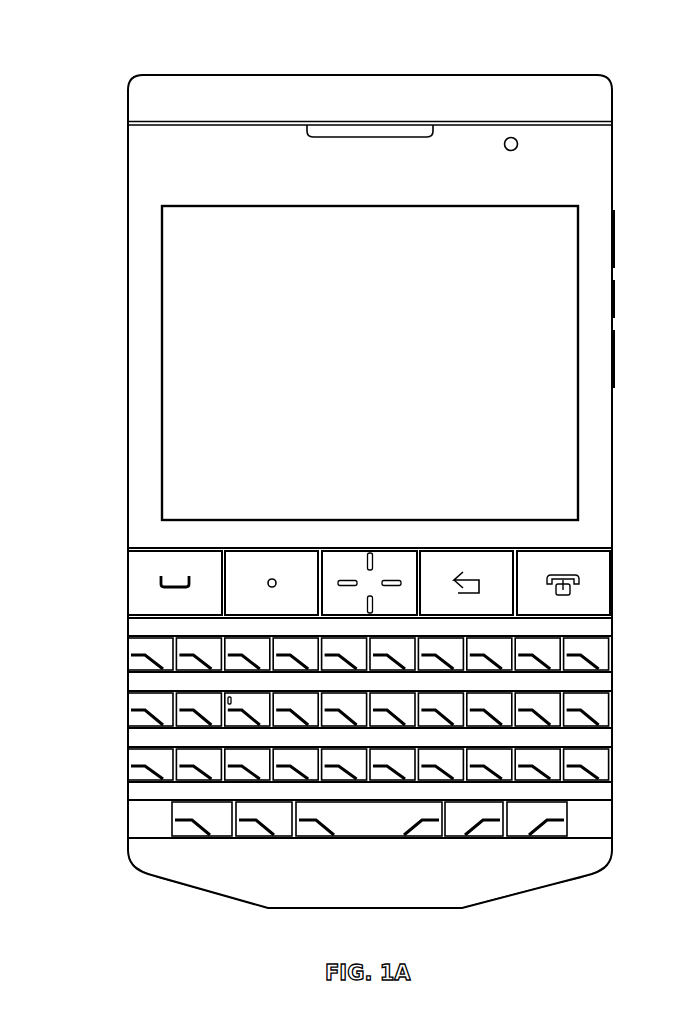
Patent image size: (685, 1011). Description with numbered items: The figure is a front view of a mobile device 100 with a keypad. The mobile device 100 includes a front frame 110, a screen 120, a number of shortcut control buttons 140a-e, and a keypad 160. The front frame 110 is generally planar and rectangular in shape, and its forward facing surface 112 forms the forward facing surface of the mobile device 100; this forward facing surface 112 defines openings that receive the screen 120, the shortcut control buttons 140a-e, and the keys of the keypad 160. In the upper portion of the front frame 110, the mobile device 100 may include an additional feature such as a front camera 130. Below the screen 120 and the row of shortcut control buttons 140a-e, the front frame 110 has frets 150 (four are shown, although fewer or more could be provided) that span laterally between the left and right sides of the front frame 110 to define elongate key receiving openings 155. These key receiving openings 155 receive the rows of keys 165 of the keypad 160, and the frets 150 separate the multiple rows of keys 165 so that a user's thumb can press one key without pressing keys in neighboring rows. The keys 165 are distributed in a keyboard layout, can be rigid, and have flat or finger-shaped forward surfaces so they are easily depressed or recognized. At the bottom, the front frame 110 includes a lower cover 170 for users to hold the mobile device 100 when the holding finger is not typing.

The mobile device 100 is at (128, 37).
The front frame 110 is at (226, 112).
The forward facing surface 112 is at (145, 327).
The screen 120 is at (177, 228).
The front camera 130 is at (518, 144).
The shortcut control buttons 140a-e is at (123, 549).
The frets 150 is at (133, 627).
The key receiving openings 155 is at (143, 815).
The keypad 160 is at (133, 663).
The keys 165 is at (133, 750).
The lower cover 170 is at (218, 878).